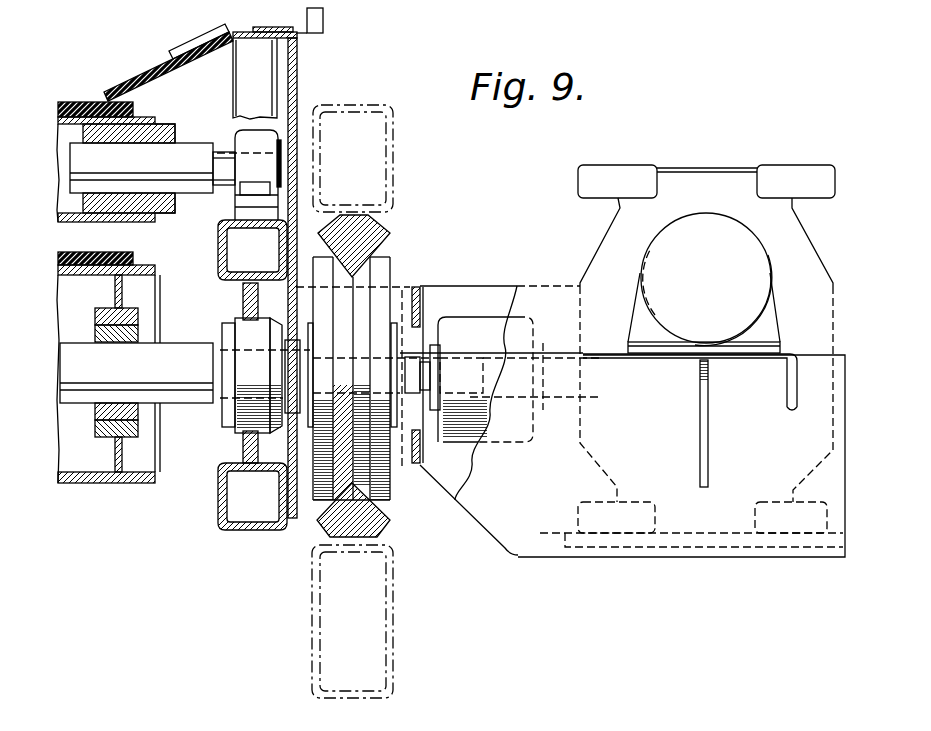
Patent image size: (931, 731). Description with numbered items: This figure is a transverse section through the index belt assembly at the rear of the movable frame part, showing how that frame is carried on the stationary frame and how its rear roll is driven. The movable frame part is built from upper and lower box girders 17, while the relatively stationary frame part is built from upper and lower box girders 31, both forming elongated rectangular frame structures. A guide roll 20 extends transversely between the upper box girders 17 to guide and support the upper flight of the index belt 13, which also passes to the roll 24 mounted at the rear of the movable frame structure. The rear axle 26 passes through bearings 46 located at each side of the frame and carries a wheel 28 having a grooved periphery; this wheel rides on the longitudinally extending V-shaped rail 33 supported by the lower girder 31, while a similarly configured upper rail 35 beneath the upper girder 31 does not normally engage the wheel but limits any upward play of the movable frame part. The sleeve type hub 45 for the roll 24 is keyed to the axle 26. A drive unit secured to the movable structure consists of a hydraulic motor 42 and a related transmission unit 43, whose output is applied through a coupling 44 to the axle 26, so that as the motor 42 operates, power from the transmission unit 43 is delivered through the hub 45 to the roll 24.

The index belt 13 is at (95, 78).
The guide roll 20 is at (150, 118).
The box girder 17 is at (222, 255).
The roll 24 is at (136, 483).
The sleeve type hub 45 is at (140, 411).
The bearing 46 is at (240, 327).
The axle 26 is at (228, 343).
The grooved wheel 28 is at (385, 278).
The upper rail 35 is at (384, 233).
The V-shaped rail 33 is at (391, 525).
The box girder 31 is at (342, 108).
The coupling 44 is at (500, 311).
The hydraulic motor 42 is at (730, 267).
The transmission unit 43 is at (665, 406).